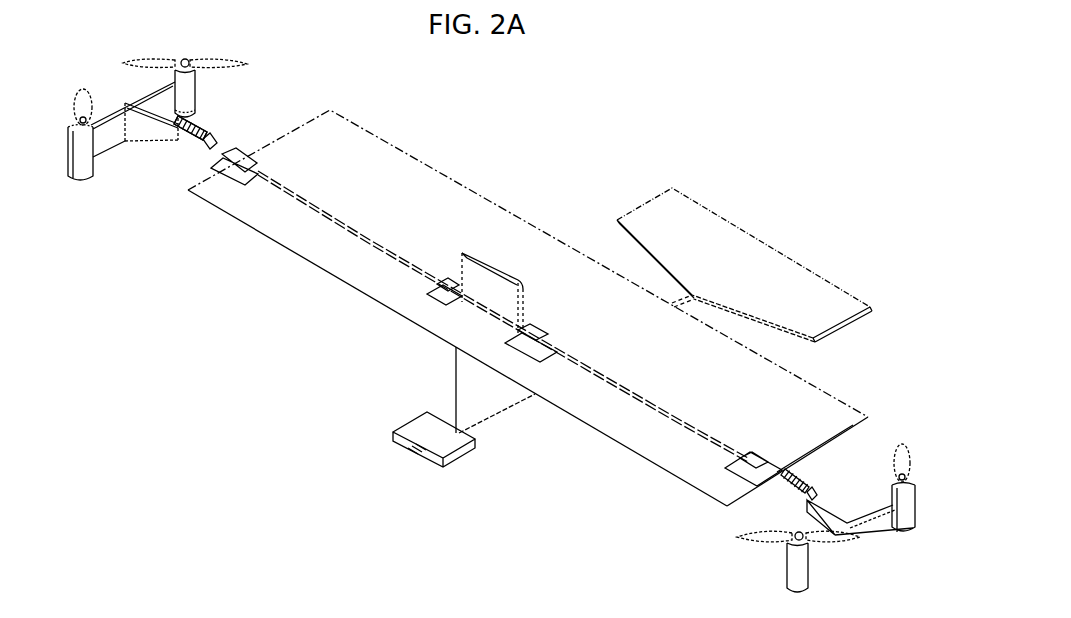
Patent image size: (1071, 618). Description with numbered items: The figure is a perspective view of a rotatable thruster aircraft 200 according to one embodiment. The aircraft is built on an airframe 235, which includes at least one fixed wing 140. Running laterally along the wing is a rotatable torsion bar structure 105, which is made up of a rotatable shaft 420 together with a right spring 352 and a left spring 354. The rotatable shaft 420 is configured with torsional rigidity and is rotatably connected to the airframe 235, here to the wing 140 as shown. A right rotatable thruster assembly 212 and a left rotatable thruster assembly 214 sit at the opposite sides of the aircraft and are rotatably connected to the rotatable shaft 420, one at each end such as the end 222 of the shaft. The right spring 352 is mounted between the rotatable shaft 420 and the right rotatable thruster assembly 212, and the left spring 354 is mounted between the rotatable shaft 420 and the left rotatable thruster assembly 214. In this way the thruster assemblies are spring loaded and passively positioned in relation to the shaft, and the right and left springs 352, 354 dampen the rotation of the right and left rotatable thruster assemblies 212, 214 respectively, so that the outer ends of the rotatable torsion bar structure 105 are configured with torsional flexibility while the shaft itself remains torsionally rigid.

The rotatable thruster aircraft 200 is at (255, 373).
The rotatable torsion bar structure 105 is at (278, 222).
The fixed wing 140 is at (368, 124).
The rotatable shaft 420 is at (327, 203).
The airframe 235 is at (376, 356).
The right rotatable thruster assembly 212 is at (72, 195).
The left rotatable thruster assembly 214 is at (741, 573).
The end of the rotatable shaft 222 is at (182, 140).
The right spring 352 is at (198, 127).
The left spring 354 is at (809, 481).